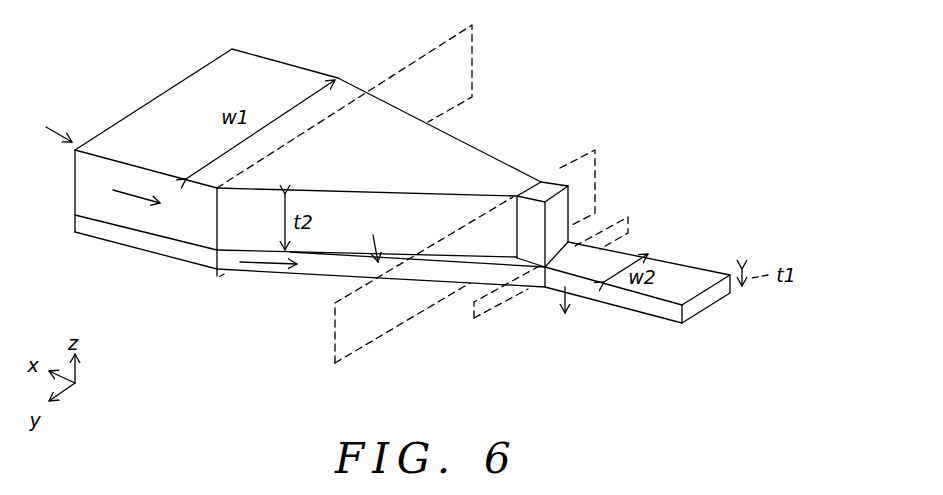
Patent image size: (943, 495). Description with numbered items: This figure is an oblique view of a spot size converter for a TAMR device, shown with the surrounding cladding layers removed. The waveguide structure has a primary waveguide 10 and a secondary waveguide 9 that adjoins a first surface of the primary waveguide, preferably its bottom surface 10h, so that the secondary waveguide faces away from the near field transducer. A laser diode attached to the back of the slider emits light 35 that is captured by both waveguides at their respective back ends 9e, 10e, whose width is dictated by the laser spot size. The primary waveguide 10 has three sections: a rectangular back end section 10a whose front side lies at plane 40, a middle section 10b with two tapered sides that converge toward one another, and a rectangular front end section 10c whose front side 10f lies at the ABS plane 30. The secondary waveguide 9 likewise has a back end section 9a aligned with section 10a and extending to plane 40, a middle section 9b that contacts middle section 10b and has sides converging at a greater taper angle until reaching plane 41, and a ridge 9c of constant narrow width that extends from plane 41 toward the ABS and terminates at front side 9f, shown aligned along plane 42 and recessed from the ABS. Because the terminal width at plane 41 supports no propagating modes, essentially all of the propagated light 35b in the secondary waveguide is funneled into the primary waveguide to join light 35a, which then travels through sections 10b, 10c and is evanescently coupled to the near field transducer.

The secondary waveguide 9 is at (70, 163).
The back end section of the secondary waveguide 9a is at (163, 128).
The middle section of the secondary waveguide 9b is at (457, 163).
The ridge 9c is at (543, 181).
The back end of the secondary waveguide 9e is at (188, 75).
The front side of the ridge 9f is at (563, 228).
The primary waveguide 10 is at (143, 260).
The back end section of the primary waveguide 10a is at (100, 231).
The middle section of the primary waveguide 10b is at (365, 267).
The front end section of the primary waveguide 10c is at (668, 310).
The back end of the primary waveguide 10e is at (74, 220).
The front side of the primary waveguide 10f is at (708, 306).
The bottom surface of the primary waveguide 10h is at (687, 280).
The ABS plane 30 is at (679, 297).
The light 35 is at (45, 124).
The propagated light in the primary waveguide 35a is at (411, 297).
The propagated light in the secondary waveguide 35b is at (257, 226).
The plane 40- 40 is at (216, 281).
The plane 41- 41 is at (334, 330).
The plane 42- 42 is at (474, 318).